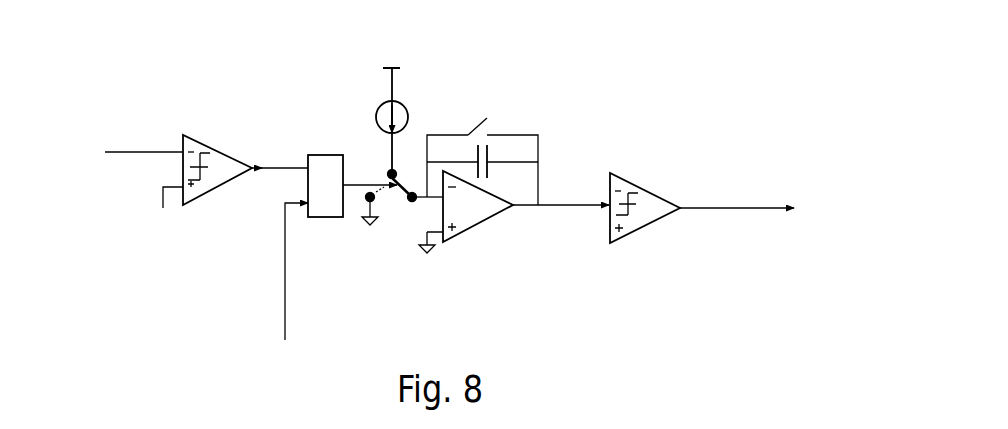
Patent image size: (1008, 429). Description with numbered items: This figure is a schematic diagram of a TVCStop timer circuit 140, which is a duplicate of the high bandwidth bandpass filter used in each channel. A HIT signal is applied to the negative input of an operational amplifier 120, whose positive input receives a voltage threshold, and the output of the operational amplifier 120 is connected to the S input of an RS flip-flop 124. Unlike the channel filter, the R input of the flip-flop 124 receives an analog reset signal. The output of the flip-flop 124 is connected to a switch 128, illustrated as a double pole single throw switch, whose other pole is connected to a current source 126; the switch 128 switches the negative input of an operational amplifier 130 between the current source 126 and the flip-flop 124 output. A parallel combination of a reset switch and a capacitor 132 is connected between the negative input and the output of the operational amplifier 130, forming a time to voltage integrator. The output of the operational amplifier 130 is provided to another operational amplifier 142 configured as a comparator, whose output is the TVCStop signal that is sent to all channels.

The operational amplifier 120 is at (222, 146).
The flip-flop 124 is at (330, 153).
The current source 126 is at (407, 101).
The switch 128 is at (393, 208).
The operational amplifier 130 is at (487, 125).
The capacitor 132 is at (488, 174).
The TVCStop timer circuit 140 is at (635, 47).
The operational amplifier 142 is at (657, 193).